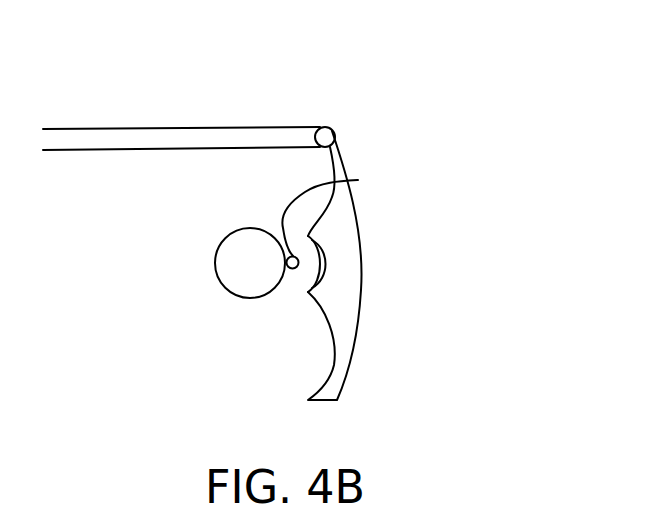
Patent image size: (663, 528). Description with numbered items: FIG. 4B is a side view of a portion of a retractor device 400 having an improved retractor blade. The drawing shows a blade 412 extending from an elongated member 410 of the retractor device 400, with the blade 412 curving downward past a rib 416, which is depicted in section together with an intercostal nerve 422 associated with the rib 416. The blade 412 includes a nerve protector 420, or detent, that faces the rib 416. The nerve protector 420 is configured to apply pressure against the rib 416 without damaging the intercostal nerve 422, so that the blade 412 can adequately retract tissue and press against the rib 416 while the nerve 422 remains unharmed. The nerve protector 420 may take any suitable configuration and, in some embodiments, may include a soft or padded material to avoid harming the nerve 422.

The retractor device 400 is at (474, 90).
The pin / shaft 410 is at (249, 124).
The blade 412 is at (366, 262).
The rib 416 is at (229, 233).
The nerve protector 420 is at (358, 180).
The intercostal nerve 422 is at (292, 290).